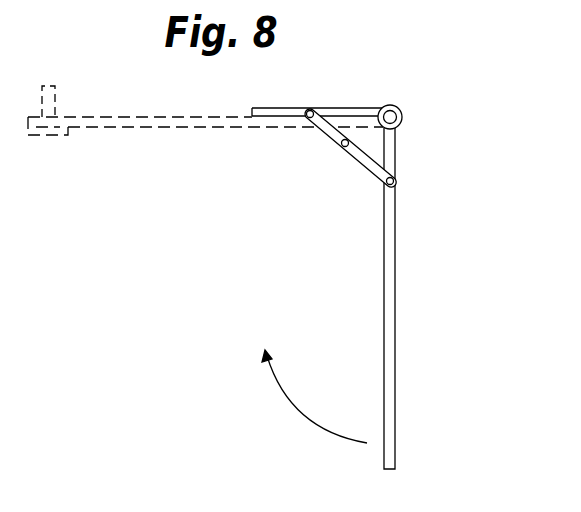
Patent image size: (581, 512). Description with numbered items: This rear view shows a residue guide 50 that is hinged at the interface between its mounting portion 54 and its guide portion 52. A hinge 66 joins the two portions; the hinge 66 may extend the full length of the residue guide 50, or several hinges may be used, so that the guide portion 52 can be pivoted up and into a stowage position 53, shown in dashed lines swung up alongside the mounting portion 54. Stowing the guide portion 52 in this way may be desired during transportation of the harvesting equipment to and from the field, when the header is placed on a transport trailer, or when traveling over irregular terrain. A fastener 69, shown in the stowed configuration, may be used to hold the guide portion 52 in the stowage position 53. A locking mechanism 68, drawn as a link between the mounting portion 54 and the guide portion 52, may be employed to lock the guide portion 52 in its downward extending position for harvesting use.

The residue guide 50 is at (462, 138).
The guide portion 52 is at (396, 284).
The stowage position 53 is at (92, 128).
The mounting portion 54 is at (268, 108).
The hinge 66 is at (397, 106).
The locking mechanism 68 is at (332, 157).
The fastener 69 is at (58, 103).